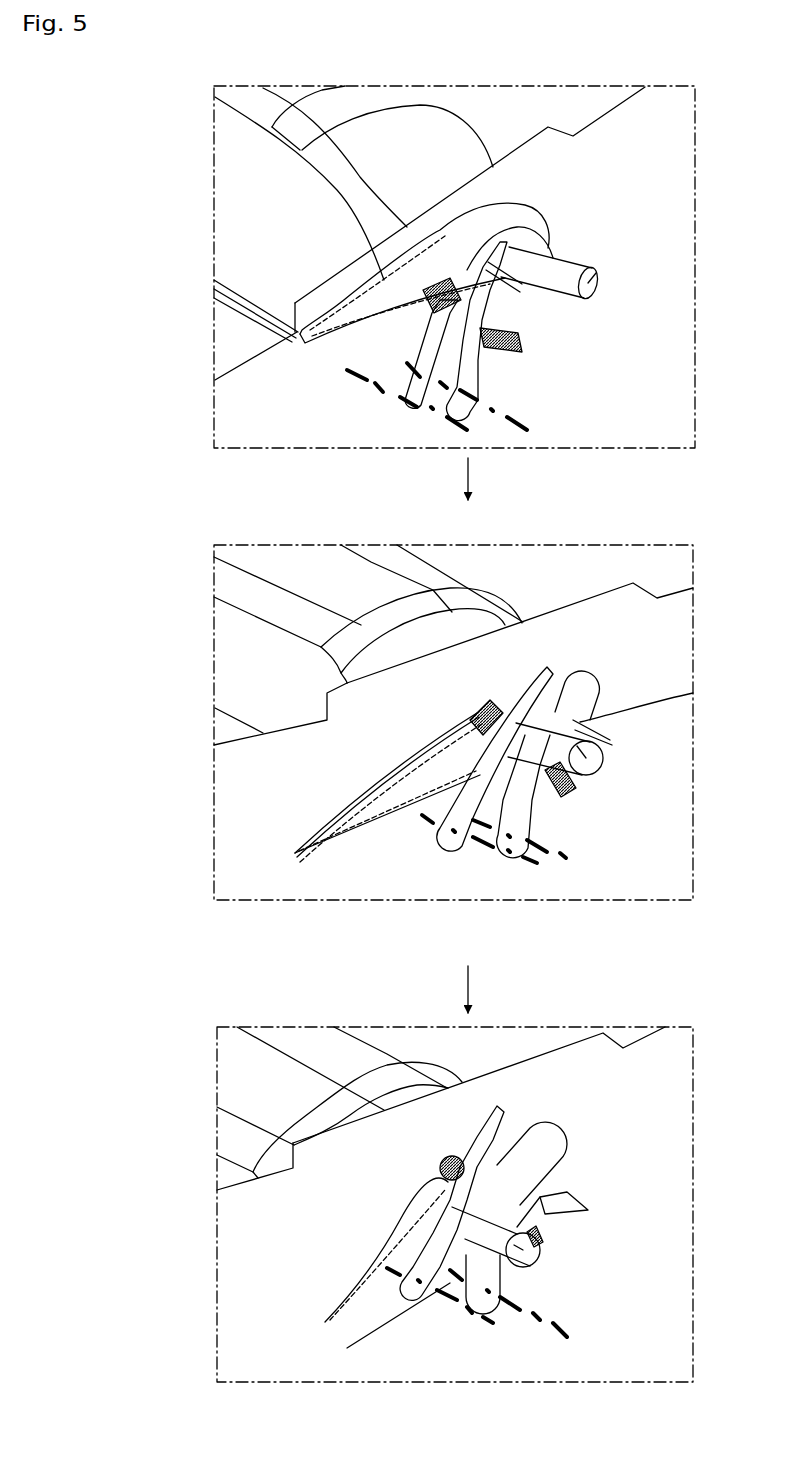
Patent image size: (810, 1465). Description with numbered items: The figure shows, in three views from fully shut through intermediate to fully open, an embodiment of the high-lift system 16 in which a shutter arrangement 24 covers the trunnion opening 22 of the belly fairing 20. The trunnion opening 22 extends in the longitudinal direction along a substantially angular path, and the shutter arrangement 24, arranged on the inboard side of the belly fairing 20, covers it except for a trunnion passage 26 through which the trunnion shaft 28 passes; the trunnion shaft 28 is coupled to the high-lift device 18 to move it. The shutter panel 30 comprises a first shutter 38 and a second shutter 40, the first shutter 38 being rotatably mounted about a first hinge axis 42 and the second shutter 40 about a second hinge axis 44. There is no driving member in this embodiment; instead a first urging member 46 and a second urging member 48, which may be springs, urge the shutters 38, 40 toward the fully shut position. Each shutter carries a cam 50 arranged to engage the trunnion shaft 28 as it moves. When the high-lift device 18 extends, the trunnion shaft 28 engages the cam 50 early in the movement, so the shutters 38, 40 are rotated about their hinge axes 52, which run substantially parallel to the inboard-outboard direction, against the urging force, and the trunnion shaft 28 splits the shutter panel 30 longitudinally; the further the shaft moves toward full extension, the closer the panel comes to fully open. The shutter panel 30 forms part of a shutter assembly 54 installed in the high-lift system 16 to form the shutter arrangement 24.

The high-lift system 16 is at (205, 157).
The high-lift device 18 is at (450, 135).
The belly fairing 20 is at (655, 187).
The trunnion opening 22 is at (588, 693).
The shutter arrangement 24 is at (258, 393).
The trunnion passage 26 is at (537, 223).
The trunnion shaft 28 is at (590, 285).
The shutter panel 30 is at (483, 357).
The first shutter 38 is at (440, 350).
The second shutter 40 is at (492, 296).
The first hinge axis 42 is at (380, 387).
The second hinge axis 44 is at (528, 428).
The first urging member 46 is at (455, 285).
The second urging member 48 is at (527, 347).
The cam 50 is at (523, 223).
The hinge axis 52 is at (350, 373).
The shutter assembly 54 is at (395, 290).